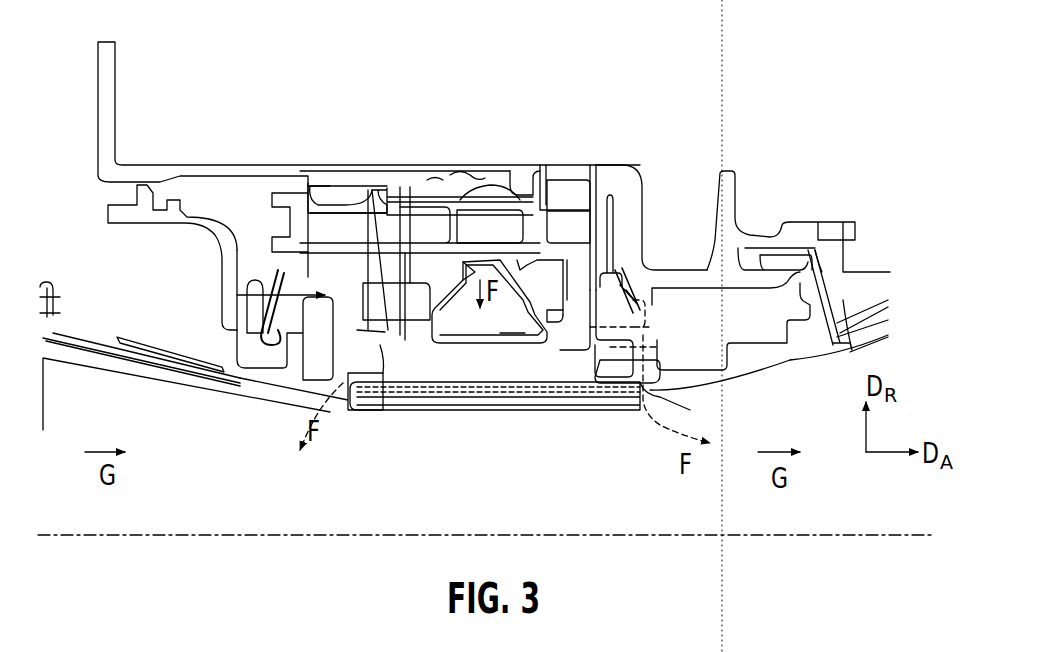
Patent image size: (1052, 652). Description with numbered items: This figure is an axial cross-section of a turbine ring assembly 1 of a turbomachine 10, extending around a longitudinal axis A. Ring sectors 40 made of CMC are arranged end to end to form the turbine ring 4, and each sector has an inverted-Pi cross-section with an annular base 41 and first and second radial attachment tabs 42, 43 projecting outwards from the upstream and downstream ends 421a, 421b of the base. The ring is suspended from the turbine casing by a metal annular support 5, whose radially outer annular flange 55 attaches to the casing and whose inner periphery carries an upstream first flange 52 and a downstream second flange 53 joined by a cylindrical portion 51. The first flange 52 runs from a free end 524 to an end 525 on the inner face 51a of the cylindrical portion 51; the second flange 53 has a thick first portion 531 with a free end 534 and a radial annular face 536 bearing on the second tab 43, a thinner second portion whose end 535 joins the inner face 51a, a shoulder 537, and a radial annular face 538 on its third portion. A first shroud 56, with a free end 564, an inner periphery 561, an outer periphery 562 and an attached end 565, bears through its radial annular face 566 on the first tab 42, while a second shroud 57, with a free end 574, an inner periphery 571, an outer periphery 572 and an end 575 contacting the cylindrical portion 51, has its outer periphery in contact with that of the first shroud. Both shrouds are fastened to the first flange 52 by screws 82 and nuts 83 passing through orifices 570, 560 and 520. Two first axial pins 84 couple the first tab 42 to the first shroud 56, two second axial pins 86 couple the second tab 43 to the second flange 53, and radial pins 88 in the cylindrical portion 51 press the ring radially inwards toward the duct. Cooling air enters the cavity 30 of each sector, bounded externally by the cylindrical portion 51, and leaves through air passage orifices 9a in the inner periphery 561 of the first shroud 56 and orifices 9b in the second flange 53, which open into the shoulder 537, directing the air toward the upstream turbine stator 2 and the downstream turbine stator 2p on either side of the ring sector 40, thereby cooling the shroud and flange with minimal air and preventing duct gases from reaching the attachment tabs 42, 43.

The turbine ring assembly 1 is at (677, 115).
The turbine stator 2 is at (103, 337).
The turbine stator 2p is at (866, 262).
The turbine ring 4 is at (627, 493).
The annular support 5 is at (180, 155).
The air passage orifices 9a is at (337, 393).
The air passage orifices 9b is at (640, 283).
The turbomachine 10 is at (747, 60).
The cooling air circulation cavity 30 is at (489, 301).
The ring sector 40 is at (657, 480).
The annular base 41 is at (483, 377).
The first radial attachment tab 42 is at (412, 345).
The second radial attachment tab 43 is at (585, 345).
The cylindrical portion 51 is at (510, 167).
The inner face 51a is at (610, 190).
The first annular radial flange 52 is at (420, 60).
The second annular radial flange 53 is at (647, 222).
The radially outer annular flange 55 is at (112, 97).
The first shroud 56 is at (360, 178).
The second shroud 57 is at (303, 307).
The attachment screws 82 is at (290, 222).
The nuts 83 is at (586, 190).
The first axial pins 84 is at (427, 340).
The second axial pins 86 is at (577, 330).
The radial pins 88 is at (430, 184).
The upstream end 421a is at (355, 385).
The downstream end 421b is at (660, 397).
The orifice 520 is at (423, 187).
The first free end 524 is at (453, 197).
The second end 525 is at (453, 195).
The first portion 531 is at (607, 362).
The first free end 534 is at (627, 357).
The second end 535 is at (650, 187).
The radial annular face 536 is at (587, 380).
The shoulder 537 is at (612, 273).
The radial annular face 538 is at (630, 330).
The orifice 560 is at (400, 187).
The inner periphery 561 is at (385, 340).
The outer periphery 562 is at (372, 190).
The first free end 564 is at (275, 333).
The second end 565 is at (348, 186).
The radial annular face 566 is at (410, 333).
The orifice 570 is at (308, 230).
The inner periphery 571 is at (330, 350).
The outer periphery 572 is at (308, 258).
The first free end 574 is at (333, 390).
The second end 575 is at (320, 183).
The longitudinal axis A is at (880, 535).